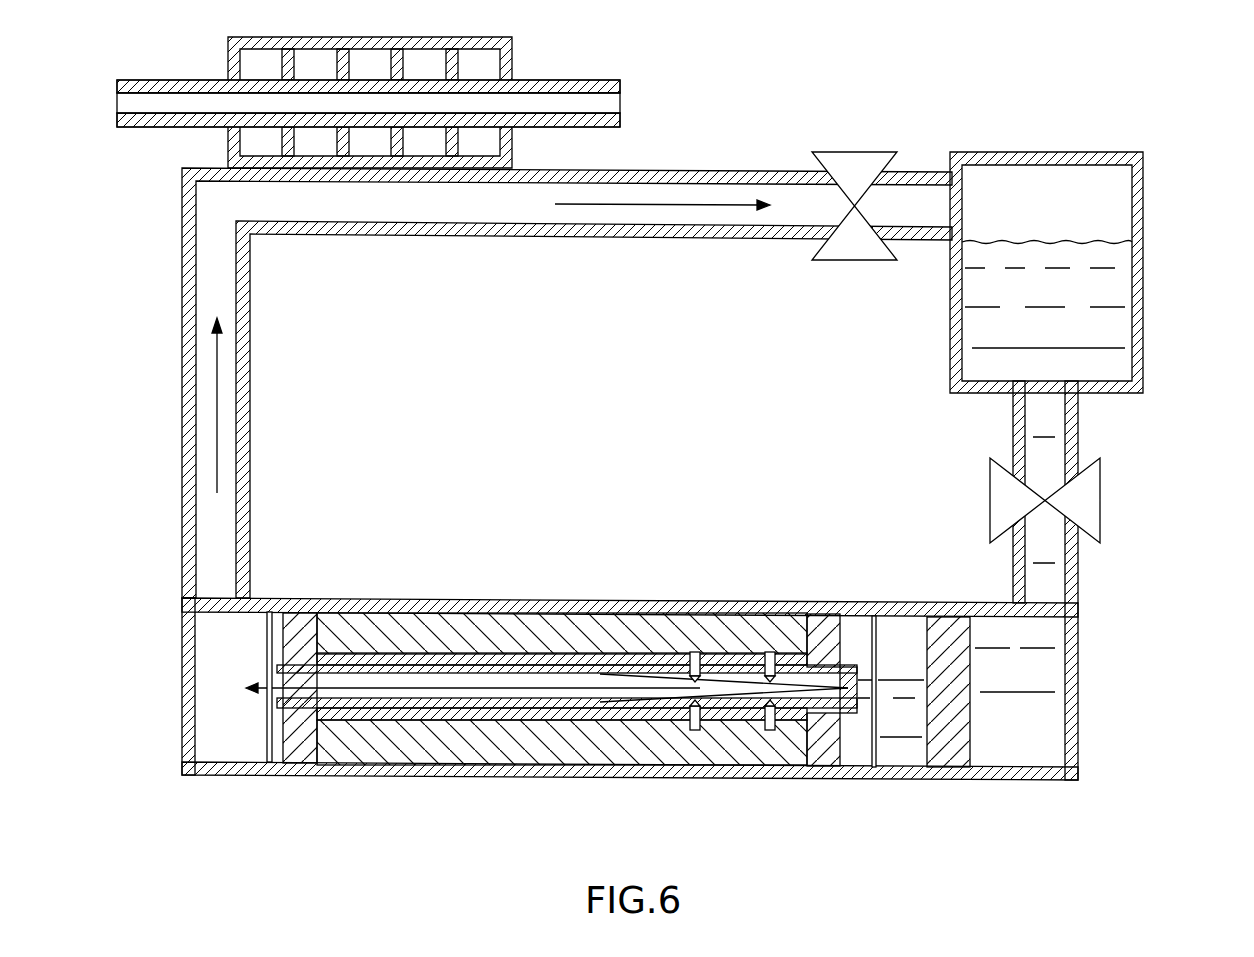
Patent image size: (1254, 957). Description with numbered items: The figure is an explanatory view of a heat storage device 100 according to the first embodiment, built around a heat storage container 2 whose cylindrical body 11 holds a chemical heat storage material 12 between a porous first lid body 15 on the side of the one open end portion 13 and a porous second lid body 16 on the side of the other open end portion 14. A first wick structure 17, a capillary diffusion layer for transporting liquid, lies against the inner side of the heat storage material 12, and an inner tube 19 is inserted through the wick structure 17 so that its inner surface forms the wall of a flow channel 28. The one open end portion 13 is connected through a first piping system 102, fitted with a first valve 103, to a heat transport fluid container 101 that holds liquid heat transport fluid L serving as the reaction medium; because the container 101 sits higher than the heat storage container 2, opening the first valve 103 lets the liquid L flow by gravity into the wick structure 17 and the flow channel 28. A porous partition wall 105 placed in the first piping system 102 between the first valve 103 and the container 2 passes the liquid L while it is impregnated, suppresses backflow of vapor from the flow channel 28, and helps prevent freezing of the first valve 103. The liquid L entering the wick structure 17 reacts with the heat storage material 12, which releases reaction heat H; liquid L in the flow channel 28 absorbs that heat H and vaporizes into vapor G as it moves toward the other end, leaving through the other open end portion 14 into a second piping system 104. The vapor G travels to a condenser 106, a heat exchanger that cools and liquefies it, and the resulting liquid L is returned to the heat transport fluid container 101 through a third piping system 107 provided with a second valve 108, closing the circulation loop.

The heat storage container 2 is at (573, 788).
The cylindrical body 11 is at (570, 612).
The chemical heat storage material 12 is at (738, 653).
The one open end portion 13 is at (876, 640).
The other open end portion 14 is at (273, 733).
The first lid body 15 is at (825, 640).
The second lid body 16 is at (298, 630).
The first wick structure 17 is at (483, 645).
The inner tube 19 is at (855, 668).
The flow channel 28 is at (640, 745).
The heat storage device 100 is at (739, 149).
The heat transport fluid container 101 is at (1143, 214).
The first piping system 102 is at (1078, 563).
The first valve 103 is at (1100, 512).
The second piping system 104 is at (182, 468).
The partition wall 105 is at (952, 745).
The condenser 106 is at (480, 38).
The third piping system 107 is at (750, 241).
The second valve 108 is at (840, 150).
The vapor of heat transport fluid G is at (218, 418).
The reaction heat H is at (690, 652).
The liquid heat transport fluid L is at (1105, 333).